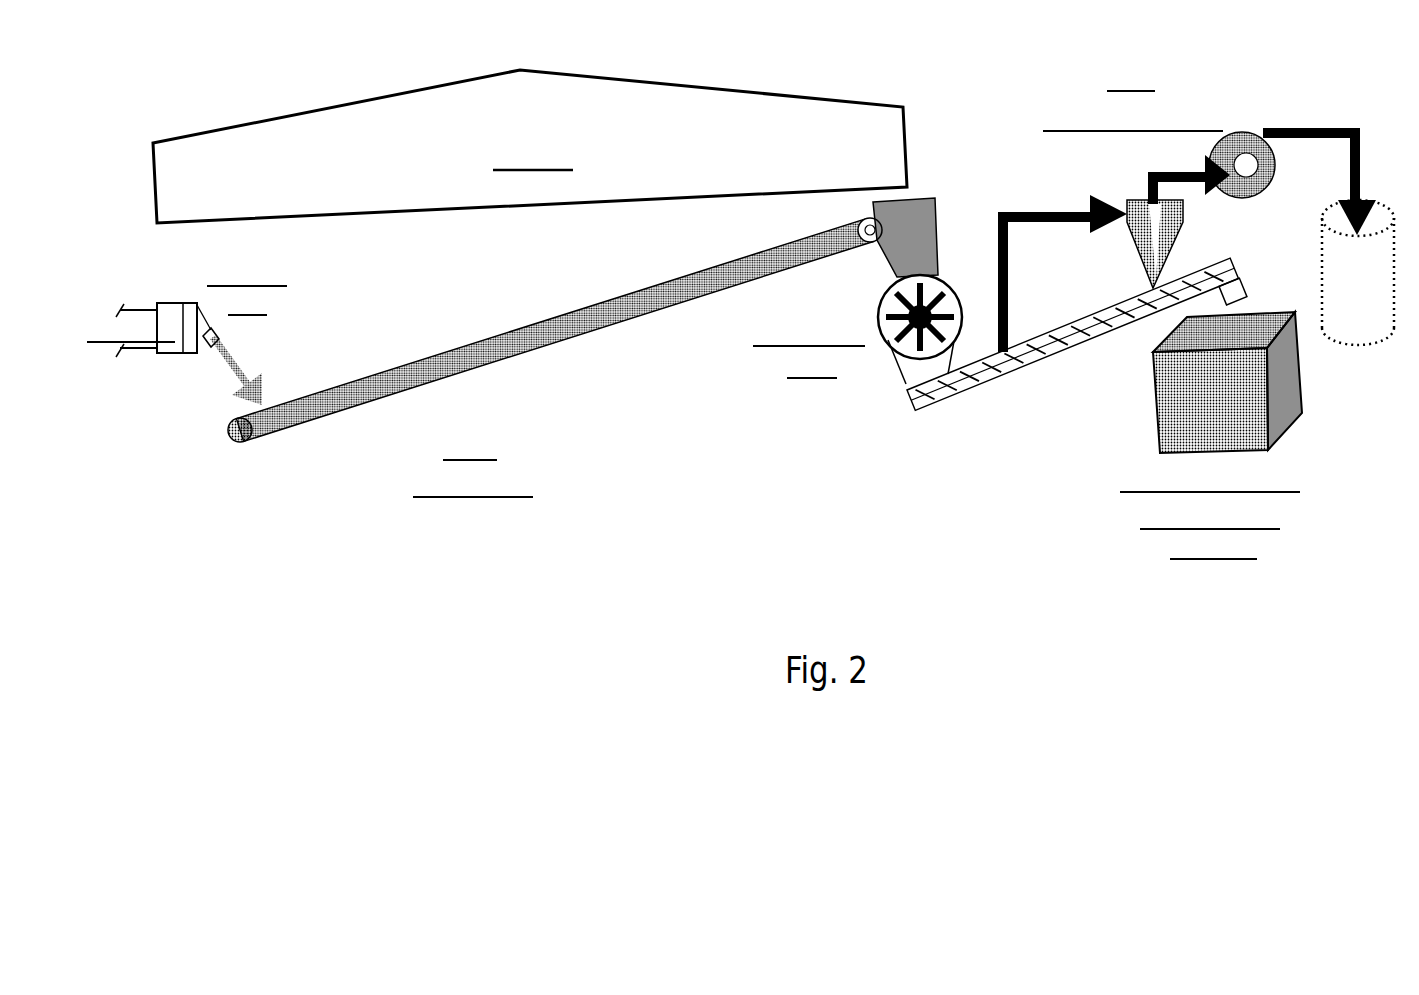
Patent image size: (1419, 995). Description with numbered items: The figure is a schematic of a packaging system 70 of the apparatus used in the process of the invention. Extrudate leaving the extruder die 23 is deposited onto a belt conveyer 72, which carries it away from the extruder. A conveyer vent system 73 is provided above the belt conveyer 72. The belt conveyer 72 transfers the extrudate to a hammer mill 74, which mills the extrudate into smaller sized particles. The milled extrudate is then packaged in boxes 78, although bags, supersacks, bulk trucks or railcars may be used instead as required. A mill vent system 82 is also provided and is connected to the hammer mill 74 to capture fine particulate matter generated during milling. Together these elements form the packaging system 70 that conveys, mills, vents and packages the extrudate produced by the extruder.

The packaging system 70 is at (673, 533).
The conveyer vent system 73 is at (703, 107).
The extruder die 23 is at (203, 345).
The belt conveyer 72 is at (530, 350).
The hammer mill 74 is at (868, 364).
The boxes 78 is at (1287, 432).
The mill vent system 82 is at (1234, 106).